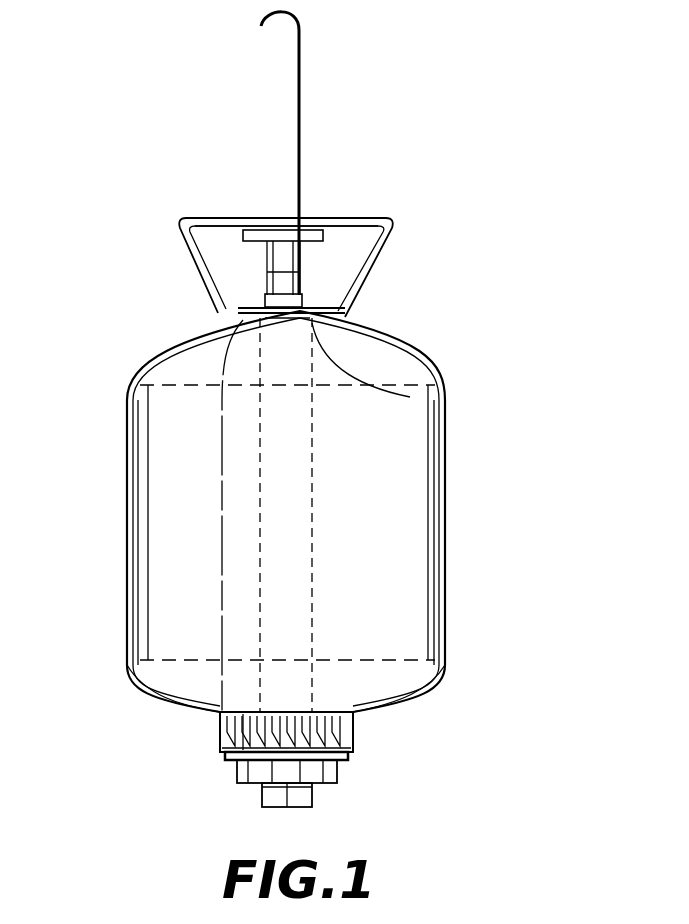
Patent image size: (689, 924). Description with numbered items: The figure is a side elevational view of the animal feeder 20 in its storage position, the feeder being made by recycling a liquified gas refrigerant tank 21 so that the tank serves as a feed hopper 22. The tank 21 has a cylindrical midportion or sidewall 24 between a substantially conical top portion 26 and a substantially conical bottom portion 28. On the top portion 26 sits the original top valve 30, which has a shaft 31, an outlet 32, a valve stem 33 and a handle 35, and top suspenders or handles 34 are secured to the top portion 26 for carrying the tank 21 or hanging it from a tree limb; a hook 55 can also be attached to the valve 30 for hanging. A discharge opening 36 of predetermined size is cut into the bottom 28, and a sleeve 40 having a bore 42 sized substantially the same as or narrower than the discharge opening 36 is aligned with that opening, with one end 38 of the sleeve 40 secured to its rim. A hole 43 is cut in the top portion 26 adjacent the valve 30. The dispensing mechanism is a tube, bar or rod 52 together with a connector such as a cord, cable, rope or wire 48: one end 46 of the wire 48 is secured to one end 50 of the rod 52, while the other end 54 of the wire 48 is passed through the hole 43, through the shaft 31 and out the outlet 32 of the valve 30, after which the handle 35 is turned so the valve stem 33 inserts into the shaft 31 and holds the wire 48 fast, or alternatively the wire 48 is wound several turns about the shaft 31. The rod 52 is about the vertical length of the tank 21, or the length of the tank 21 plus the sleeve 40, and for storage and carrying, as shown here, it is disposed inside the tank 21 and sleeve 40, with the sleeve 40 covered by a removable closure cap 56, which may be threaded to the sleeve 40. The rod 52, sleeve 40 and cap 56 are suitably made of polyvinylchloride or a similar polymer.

The feeder 20 is at (498, 505).
The refrigerant tank 21 is at (445, 470).
The feed hopper 22 is at (445, 617).
The cylindrical midportion or sidewall 24 is at (127, 518).
The top portion 26 is at (413, 353).
The bottom portion 28 is at (198, 712).
The top valve 30 is at (392, 219).
The shaft 31 is at (242, 233).
The outlet 32 is at (270, 280).
The valve stem 33 is at (302, 270).
The top suspenders or handles 34 is at (312, 218).
The handle 35 is at (322, 233).
The discharge opening 36 is at (310, 705).
The end of sleeve 38 is at (353, 717).
The sleeve 40 is at (353, 748).
The bore 42 is at (340, 767).
The hole 43 is at (340, 314).
The end of wire 46 is at (163, 342).
The wire 48 is at (300, 298).
The end of rod 50 is at (410, 397).
The rod 52 is at (260, 472).
The other end of wire 54 is at (238, 305).
The hook 55 is at (299, 80).
The closure cap 56 is at (260, 800).